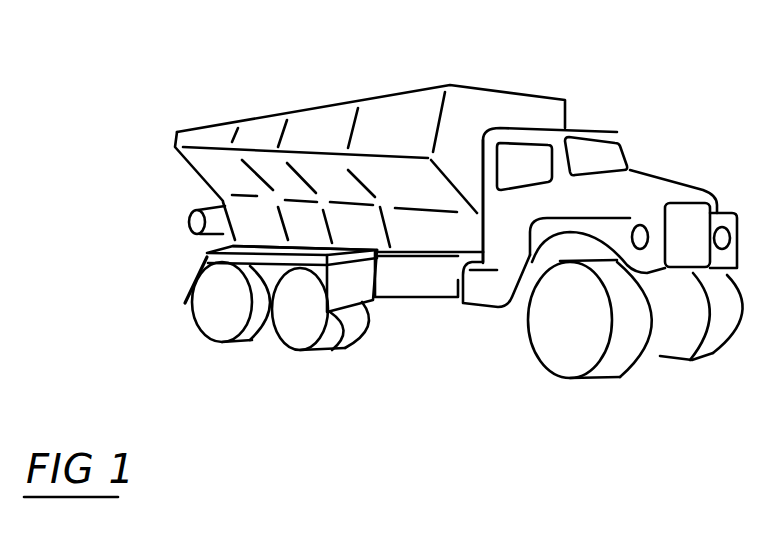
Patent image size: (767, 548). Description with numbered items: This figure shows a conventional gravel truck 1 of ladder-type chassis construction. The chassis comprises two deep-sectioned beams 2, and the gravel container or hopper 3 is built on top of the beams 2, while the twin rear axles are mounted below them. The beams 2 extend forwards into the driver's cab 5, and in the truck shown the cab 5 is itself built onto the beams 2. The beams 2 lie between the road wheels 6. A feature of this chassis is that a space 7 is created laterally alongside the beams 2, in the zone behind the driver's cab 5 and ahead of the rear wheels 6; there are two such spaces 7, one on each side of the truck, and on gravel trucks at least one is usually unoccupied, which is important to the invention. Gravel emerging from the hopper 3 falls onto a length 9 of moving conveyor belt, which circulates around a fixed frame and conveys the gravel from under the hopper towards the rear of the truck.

The gravel truck 1 is at (277, 103).
The deep-sectioned beams 2 is at (440, 298).
The gravel container or hopper 3 is at (402, 89).
The driver's cab 5 is at (622, 152).
The road wheels 6 is at (300, 341).
The space 7 is at (413, 299).
The length of moving conveyor belt 9 is at (203, 236).